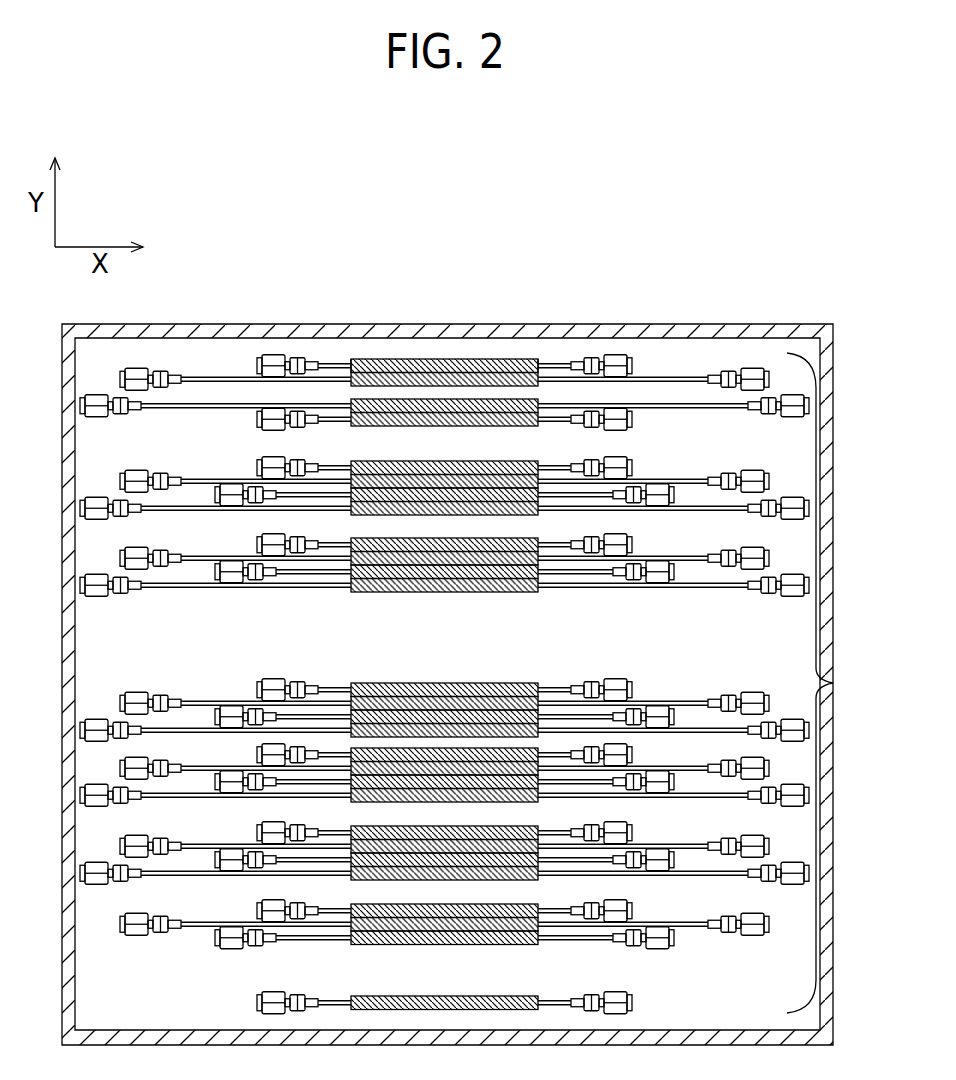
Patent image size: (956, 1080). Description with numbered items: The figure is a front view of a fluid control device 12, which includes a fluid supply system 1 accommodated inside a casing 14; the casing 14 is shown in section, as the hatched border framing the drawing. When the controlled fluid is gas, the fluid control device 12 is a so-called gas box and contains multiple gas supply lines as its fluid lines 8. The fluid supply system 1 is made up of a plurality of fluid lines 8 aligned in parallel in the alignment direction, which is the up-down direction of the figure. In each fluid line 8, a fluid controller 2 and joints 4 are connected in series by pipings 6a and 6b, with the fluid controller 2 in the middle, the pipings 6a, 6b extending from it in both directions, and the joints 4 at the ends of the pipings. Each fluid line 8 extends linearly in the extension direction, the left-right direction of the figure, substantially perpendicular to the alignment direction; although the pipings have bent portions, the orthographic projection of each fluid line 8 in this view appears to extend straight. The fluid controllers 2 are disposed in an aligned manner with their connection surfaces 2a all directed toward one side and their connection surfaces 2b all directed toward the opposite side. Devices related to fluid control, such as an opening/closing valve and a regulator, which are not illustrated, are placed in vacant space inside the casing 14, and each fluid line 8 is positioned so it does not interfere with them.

The fluid supply system 1 is at (836, 683).
The fluid controller 2 is at (459, 356).
The connection surface 2a is at (342, 358).
The connection surface 2b is at (543, 358).
The joint 4 is at (272, 352).
The piping 6a is at (325, 358).
The piping 6b is at (564, 358).
The fluid line 8 is at (641, 360).
The fluid control device 12 is at (449, 635).
The casing 14 is at (806, 310).